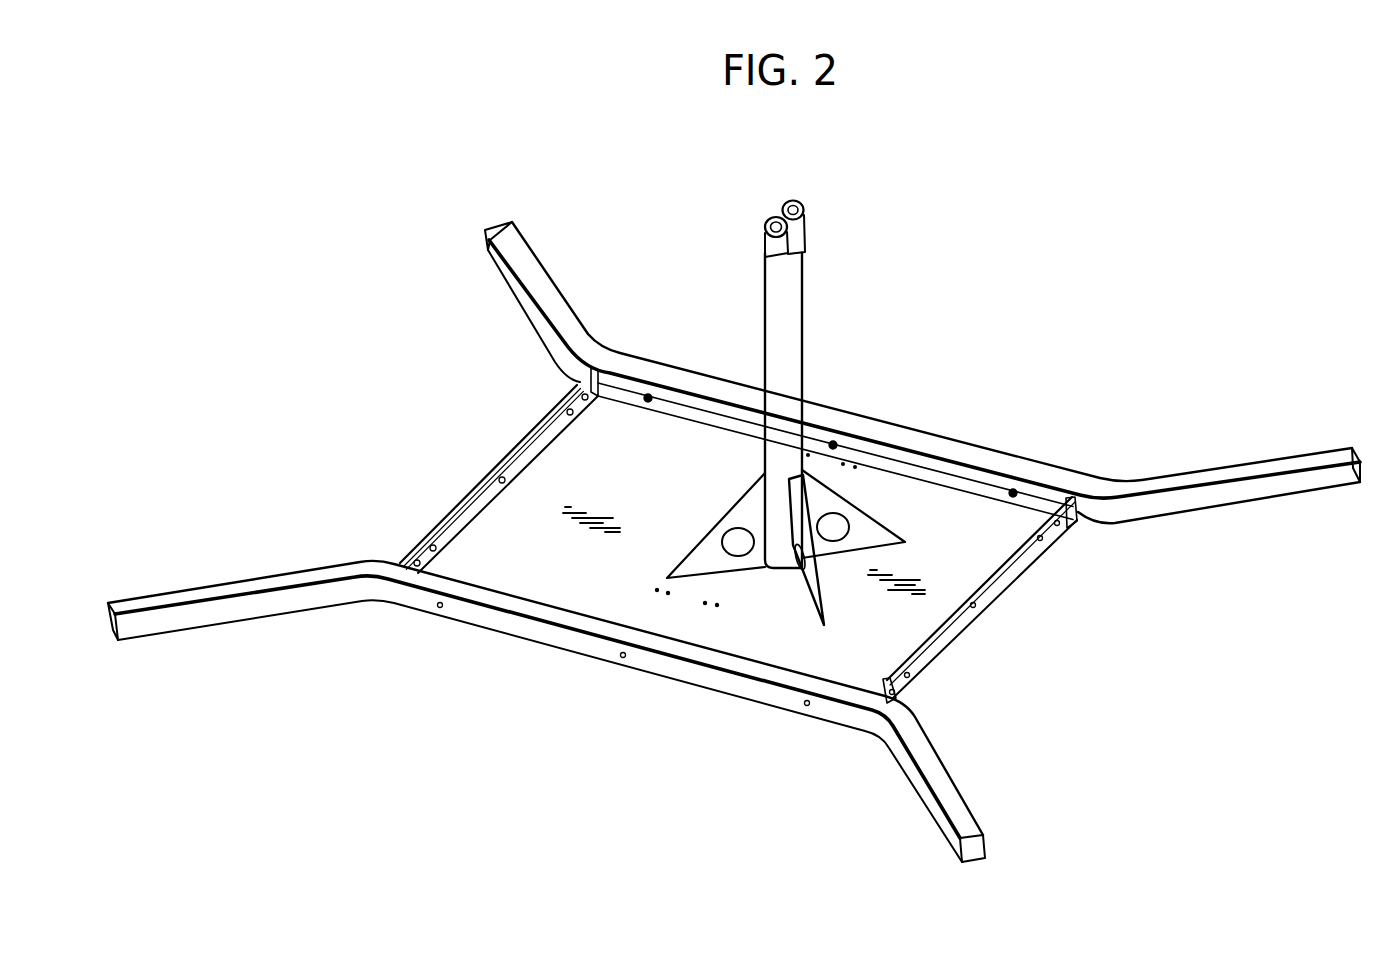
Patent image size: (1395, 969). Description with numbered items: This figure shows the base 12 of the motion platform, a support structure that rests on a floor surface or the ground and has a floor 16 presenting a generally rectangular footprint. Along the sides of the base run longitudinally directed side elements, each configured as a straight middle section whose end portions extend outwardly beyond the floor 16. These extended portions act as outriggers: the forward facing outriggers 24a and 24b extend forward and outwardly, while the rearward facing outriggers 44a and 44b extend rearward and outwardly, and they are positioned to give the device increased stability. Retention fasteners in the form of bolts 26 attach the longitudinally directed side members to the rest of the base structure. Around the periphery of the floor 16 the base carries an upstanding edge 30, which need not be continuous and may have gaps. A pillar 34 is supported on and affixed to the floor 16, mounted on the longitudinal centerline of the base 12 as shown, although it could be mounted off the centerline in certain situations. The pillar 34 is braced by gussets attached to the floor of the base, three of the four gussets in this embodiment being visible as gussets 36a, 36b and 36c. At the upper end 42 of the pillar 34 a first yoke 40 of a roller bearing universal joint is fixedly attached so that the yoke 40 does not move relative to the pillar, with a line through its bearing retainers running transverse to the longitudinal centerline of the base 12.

The base 12 is at (468, 348).
The floor 16 is at (508, 545).
The forward facing outrigger 24a is at (955, 803).
The forward facing outrigger 24b is at (1210, 477).
The bolts 26 is at (440, 607).
The upstanding edge 30 is at (997, 583).
The pillar 34 is at (786, 334).
The gusset 36a is at (867, 520).
The gusset 36b is at (810, 585).
The gusset 36c is at (745, 512).
The first yoke 40 is at (765, 256).
The upper end 42 is at (806, 256).
The rearward facing outrigger 44a is at (178, 630).
The rearward facing outrigger 44b is at (541, 264).